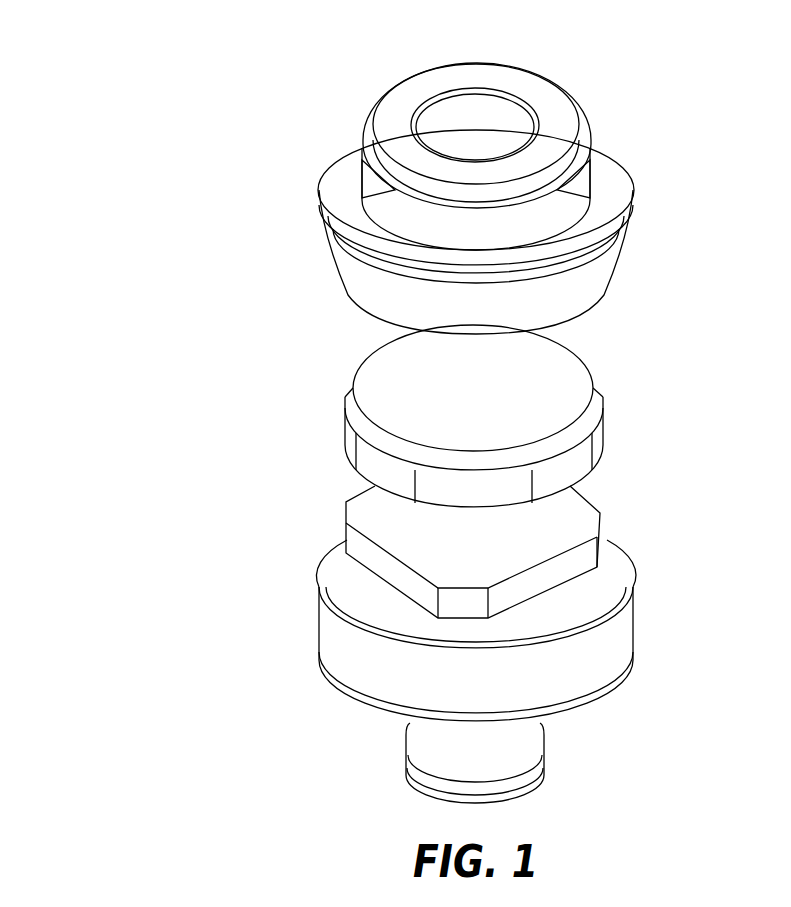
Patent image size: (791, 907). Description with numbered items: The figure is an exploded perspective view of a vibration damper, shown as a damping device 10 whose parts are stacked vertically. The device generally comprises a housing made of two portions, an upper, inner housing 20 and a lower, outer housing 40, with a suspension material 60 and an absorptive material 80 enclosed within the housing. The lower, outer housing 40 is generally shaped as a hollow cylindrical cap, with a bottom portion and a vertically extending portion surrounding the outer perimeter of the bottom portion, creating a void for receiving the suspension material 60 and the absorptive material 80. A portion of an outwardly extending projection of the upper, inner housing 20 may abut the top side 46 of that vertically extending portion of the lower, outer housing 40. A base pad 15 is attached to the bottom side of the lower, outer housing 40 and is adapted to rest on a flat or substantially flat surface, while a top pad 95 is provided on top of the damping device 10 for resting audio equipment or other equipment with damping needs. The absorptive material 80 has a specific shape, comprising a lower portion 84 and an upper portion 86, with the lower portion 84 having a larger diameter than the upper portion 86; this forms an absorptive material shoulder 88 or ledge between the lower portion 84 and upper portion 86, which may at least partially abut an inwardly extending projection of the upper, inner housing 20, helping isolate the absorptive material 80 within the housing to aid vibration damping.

The damping device 10 is at (187, 50).
The top pad 95 is at (497, 130).
The upper, inner housing 20 is at (590, 278).
The absorptive material 80 is at (537, 403).
The upper portion 86 is at (317, 331).
The absorptive material shoulder 88 is at (353, 398).
The lower portion 84 is at (320, 395).
The suspension material 60 is at (532, 558).
The top side 46 is at (328, 588).
The lower, outer housing 40 is at (602, 647).
The base pad 15 is at (500, 760).